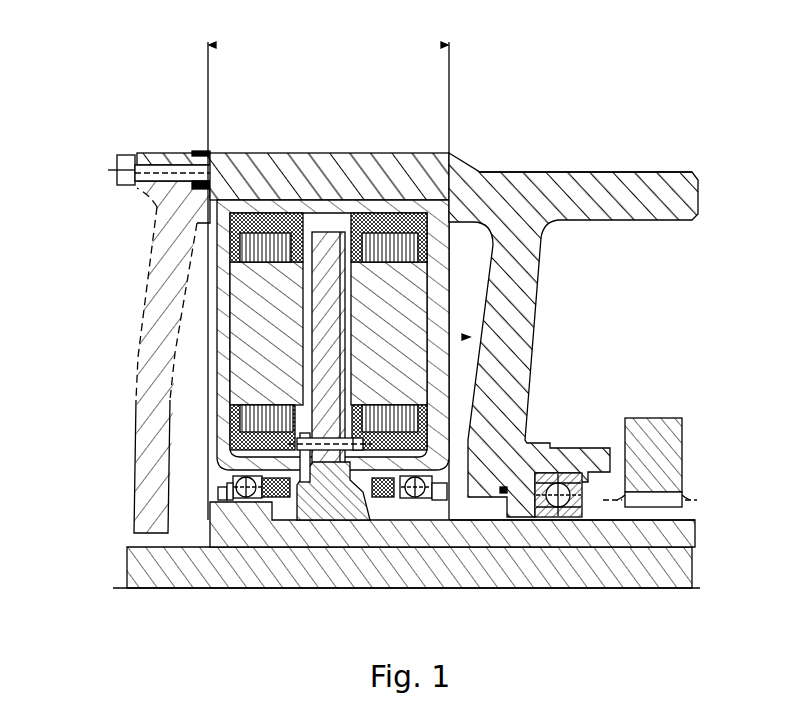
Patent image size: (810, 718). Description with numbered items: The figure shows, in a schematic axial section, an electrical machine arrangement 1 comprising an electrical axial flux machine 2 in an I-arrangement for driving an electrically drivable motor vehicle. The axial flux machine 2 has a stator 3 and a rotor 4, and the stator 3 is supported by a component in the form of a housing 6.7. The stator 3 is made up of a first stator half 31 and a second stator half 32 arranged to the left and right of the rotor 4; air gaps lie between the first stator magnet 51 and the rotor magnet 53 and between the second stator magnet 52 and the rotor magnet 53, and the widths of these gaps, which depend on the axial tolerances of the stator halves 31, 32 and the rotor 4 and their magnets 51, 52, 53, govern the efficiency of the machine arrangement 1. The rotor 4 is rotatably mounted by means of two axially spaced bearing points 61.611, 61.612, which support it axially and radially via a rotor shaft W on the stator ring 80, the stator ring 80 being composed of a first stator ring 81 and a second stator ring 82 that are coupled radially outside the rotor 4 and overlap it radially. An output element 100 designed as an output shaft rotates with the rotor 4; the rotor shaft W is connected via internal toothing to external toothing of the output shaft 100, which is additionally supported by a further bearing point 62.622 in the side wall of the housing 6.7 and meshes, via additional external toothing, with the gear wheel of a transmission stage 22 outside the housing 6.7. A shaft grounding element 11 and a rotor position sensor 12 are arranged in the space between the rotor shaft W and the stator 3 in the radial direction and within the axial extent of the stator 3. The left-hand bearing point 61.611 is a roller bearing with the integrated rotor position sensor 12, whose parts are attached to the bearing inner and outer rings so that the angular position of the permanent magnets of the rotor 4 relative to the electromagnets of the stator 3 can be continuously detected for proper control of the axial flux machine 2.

The electrical machine arrangement 1 is at (341, 103).
The electrical axial flux machine 2 is at (513, 335).
The stator 3 is at (270, 210).
The rotor 4 is at (338, 275).
The component supporting the stator in the form of a housing 6.7 is at (534, 191).
The shaft grounding element 11 is at (400, 518).
The rotor position sensor 12 is at (285, 520).
The transmission stage 22 is at (660, 418).
The first stator half 31 is at (410, 390).
The second stator half 32 is at (260, 326).
The first stator magnet 51 is at (408, 292).
The second stator magnet 52 is at (245, 356).
The rotor magnet 53 is at (420, 208).
The bearing point 61.611 is at (246, 500).
The bearing point 61.612 is at (420, 500).
The further bearing point 62.622 is at (575, 520).
The stator ring 80 is at (368, 195).
The first stator ring 81 is at (432, 350).
The second stator ring 82 is at (230, 260).
The output element 100 is at (495, 540).
The rotor shaft W is at (345, 548).